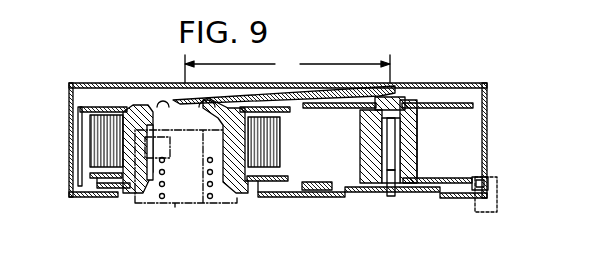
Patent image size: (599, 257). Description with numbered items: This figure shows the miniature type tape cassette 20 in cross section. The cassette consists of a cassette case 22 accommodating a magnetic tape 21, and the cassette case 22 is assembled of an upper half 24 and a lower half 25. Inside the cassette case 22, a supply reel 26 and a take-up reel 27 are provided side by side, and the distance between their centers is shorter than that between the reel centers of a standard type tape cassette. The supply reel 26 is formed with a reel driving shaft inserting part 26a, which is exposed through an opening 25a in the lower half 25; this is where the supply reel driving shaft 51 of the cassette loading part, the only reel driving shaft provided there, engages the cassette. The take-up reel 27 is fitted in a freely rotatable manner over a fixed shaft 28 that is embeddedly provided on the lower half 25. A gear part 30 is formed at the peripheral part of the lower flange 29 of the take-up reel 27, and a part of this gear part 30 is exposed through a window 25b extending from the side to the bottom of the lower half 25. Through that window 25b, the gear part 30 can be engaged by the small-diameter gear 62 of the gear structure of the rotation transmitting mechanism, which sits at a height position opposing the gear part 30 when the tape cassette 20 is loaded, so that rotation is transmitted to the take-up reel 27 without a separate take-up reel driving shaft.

The miniature type tape cassette 20 is at (96, 73).
The magnetic tape 21 is at (78, 137).
The cassette case 22 is at (458, 84).
The upper half 24 is at (488, 107).
The lower half 25 is at (70, 168).
The opening 25a is at (256, 197).
The window 25b is at (480, 203).
The supply reel 26 is at (118, 104).
The reel driving shaft inserting part 26a is at (222, 184).
The take-up reel 27 is at (432, 105).
The fixed shaft 28 is at (420, 132).
The lower flange 29 is at (462, 180).
The gear part 30 is at (476, 183).
The supply reel driving shaft 51 is at (174, 206).
The small-diameter gear 62 is at (492, 205).